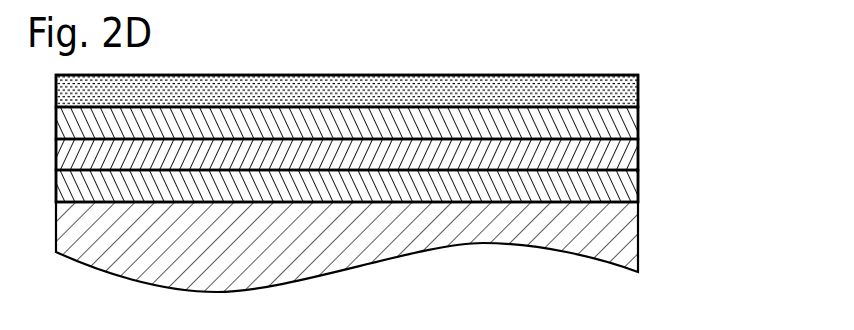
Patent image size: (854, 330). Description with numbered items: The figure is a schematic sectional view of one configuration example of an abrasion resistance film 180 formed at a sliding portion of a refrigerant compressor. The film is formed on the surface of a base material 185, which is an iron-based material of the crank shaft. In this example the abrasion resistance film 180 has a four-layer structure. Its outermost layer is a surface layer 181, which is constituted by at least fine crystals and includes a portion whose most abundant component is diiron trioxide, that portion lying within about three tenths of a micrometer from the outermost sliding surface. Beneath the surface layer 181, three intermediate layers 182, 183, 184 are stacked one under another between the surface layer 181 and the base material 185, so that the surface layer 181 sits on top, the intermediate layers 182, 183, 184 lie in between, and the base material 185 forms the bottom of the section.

The abrasion resistance film 180 is at (742, 67).
The surface layer 181 is at (638, 92).
The intermediate layer 182 is at (638, 122).
The intermediate layer 183 is at (638, 152).
The intermediate layer 184 is at (638, 183).
The base material 185 is at (638, 233).